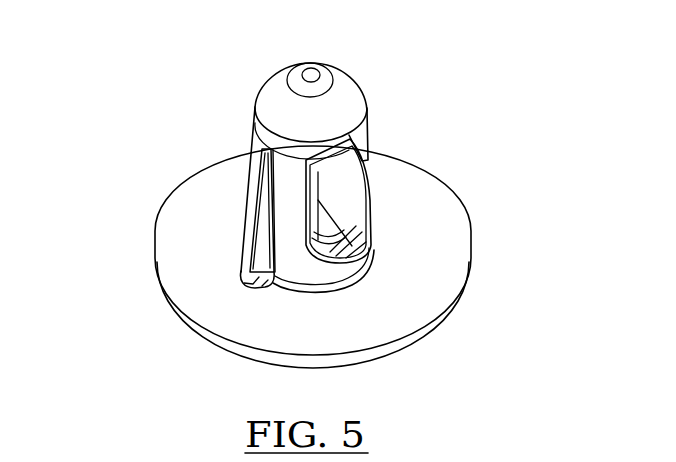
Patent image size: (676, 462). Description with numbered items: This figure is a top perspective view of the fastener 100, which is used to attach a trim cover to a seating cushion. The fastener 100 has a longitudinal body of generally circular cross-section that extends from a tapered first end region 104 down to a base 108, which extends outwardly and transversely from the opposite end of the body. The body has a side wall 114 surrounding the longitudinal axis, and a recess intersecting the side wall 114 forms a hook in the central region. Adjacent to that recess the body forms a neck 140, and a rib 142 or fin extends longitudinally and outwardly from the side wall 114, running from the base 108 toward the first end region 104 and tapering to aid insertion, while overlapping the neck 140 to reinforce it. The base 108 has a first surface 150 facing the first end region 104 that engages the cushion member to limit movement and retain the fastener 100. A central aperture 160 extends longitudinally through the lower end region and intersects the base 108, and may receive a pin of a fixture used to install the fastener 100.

The fastener 100 is at (127, 131).
The first end region 104 is at (260, 98).
The base 108 is at (440, 237).
The side wall 114 is at (287, 201).
The neck 140 is at (295, 238).
The rib 142 is at (272, 243).
The first surface 150 is at (230, 322).
The central aperture 160 is at (346, 236).